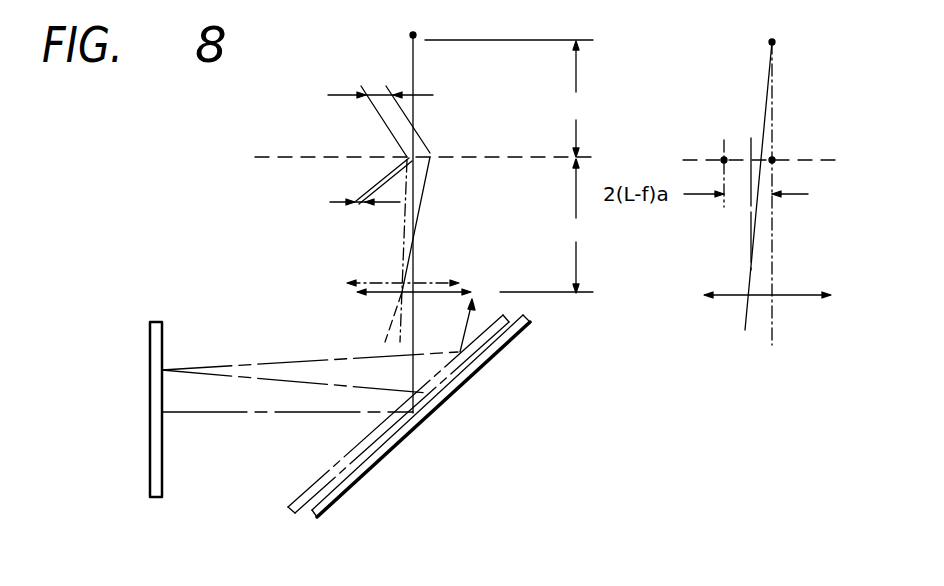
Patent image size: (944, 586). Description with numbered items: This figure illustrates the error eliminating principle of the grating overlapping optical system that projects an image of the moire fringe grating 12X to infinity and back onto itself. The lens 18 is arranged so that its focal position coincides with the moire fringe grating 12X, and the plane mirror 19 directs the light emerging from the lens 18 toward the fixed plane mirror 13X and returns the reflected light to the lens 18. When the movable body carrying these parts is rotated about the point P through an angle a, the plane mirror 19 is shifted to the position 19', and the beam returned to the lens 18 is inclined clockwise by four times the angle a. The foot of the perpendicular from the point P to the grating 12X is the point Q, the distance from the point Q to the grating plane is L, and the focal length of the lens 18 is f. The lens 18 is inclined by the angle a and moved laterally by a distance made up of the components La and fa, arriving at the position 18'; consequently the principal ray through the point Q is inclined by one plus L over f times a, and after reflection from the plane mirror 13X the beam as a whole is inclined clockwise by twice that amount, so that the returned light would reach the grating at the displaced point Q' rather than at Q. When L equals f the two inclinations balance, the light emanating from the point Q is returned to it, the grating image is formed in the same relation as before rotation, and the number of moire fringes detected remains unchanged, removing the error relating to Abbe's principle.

The moire fringe grating 12X is at (493, 155).
The plane mirror 13X is at (164, 345).
The lens 18 is at (579, 294).
The shifted lens position 18' is at (403, 260).
The plane mirror 19 is at (439, 416).
The shifted plane mirror position 19' is at (399, 376).
The point P is at (410, 34).
The point Q is at (791, 136).
The displaced image point Q' is at (703, 158).
The angle a is at (768, 108).
The displacement f·a fa is at (378, 91).
The displacement L·a La is at (356, 204).
The distance L is at (572, 99).
The focal length f is at (546, 226).